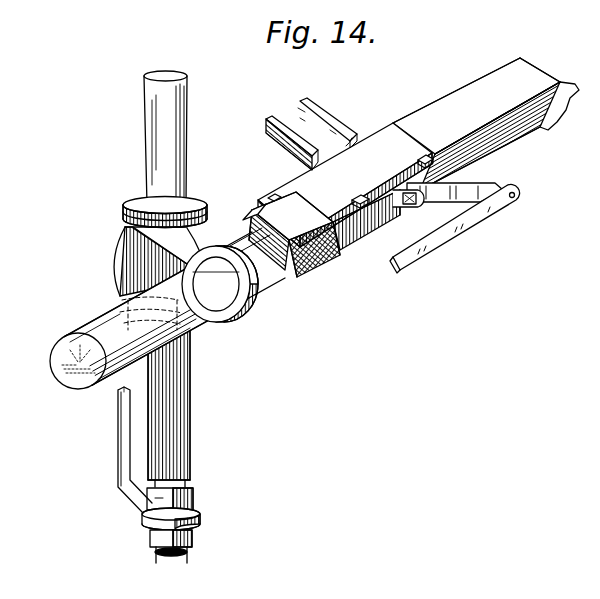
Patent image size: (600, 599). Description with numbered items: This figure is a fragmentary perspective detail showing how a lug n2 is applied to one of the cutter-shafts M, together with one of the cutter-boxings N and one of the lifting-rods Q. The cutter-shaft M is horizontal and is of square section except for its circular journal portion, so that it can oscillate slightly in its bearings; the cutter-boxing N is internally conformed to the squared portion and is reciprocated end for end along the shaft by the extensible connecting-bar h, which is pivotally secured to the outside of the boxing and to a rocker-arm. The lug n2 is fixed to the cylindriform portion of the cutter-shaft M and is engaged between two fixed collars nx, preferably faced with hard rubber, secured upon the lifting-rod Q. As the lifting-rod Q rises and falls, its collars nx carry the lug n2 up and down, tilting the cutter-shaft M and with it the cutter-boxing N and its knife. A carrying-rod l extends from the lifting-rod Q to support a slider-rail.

The cutter-shaft M is at (298, 223).
The cutter-boxing N is at (345, 172).
The lifting-rod Q is at (193, 407).
The extensible connecting-bar h is at (465, 222).
The carrying-rod l is at (125, 448).
The fixed collar nx is at (208, 199).
The lug n2 is at (130, 248).